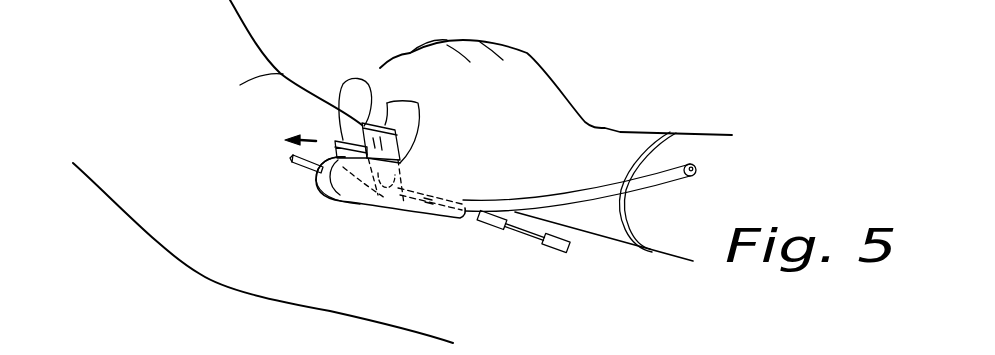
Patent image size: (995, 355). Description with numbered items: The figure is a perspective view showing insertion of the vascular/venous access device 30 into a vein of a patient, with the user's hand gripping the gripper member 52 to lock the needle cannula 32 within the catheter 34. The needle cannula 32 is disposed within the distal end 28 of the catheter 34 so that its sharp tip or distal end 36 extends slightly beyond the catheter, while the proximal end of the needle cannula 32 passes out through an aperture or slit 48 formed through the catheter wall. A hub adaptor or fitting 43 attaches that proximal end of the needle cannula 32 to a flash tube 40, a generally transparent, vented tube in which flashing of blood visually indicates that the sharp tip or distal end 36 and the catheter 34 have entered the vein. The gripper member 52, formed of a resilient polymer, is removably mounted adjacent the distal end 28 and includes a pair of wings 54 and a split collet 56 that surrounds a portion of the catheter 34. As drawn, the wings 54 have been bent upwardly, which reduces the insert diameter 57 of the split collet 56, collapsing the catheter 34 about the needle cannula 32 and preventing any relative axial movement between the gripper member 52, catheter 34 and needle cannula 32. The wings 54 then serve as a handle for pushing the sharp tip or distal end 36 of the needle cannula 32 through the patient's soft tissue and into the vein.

The distal end of the catheter 28 is at (293, 161).
The vascular/venous access device 30 is at (368, 234).
The needle cannula 32 is at (293, 162).
The catheter 34 is at (595, 188).
The sharp tip or distal end of the needle cannula 36 is at (293, 155).
The flash tube 40 is at (554, 252).
The hub adaptor or fitting 43 is at (478, 226).
The aperture or slit 48 is at (463, 203).
The gripper member 52 is at (334, 196).
The wings 54 is at (354, 84).
The split collet 56 is at (403, 204).
The insert diameter of the split collet 57 is at (408, 188).